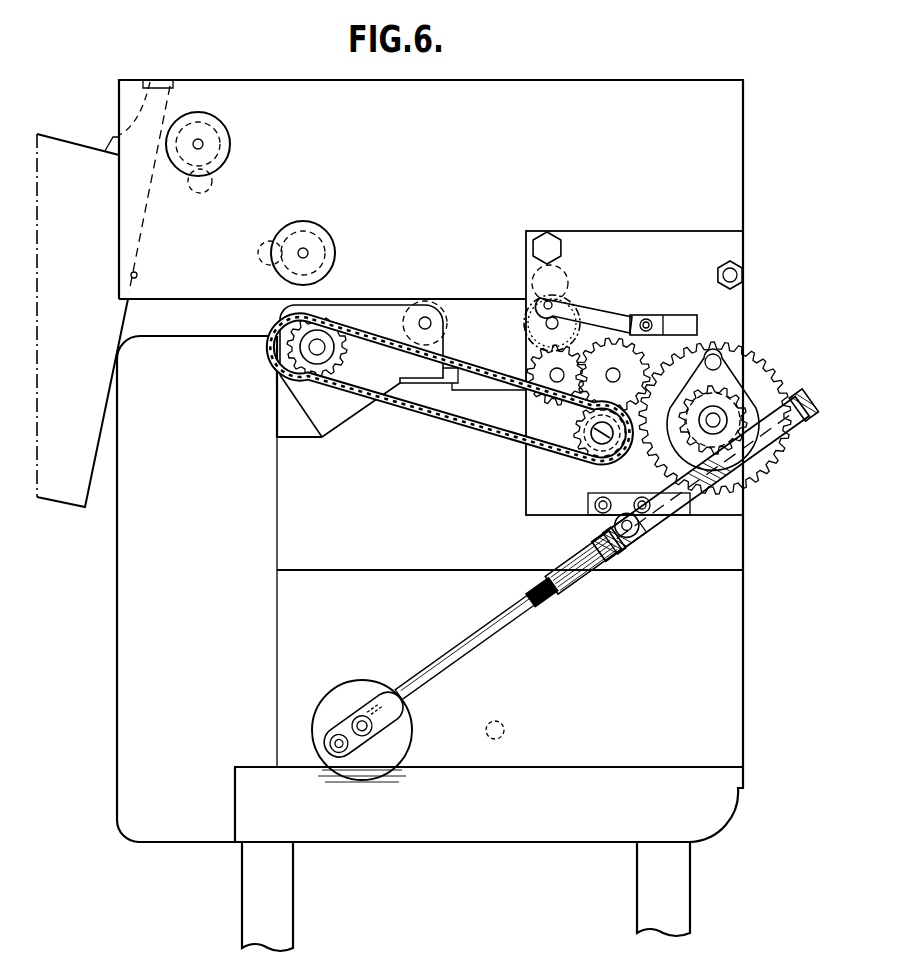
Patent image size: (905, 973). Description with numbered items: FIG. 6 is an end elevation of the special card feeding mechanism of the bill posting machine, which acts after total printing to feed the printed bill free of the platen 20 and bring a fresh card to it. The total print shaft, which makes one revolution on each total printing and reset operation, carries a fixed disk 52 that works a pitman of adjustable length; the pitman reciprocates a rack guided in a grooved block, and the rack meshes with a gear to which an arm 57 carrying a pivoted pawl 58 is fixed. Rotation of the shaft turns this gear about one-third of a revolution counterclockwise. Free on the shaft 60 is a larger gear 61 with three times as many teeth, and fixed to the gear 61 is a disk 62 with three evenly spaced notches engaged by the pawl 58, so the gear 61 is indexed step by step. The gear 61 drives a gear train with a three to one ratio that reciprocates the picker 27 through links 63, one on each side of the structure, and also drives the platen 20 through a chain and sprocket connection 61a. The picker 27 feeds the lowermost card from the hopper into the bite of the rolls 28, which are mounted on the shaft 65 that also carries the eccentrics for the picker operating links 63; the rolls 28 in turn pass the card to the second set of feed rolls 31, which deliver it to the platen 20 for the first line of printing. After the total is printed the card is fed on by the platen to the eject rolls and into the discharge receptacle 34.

The platen 20 is at (328, 318).
The feed rolls 31 is at (425, 305).
The shaft 65 is at (526, 318).
The rolls 28 is at (564, 280).
The links 63 is at (596, 312).
The picker 27 is at (660, 316).
The gear 61 is at (696, 358).
The chain and sprocket connection 61a is at (473, 426).
The arm 57 is at (722, 358).
The pawl 58 is at (735, 400).
The disk 62 is at (674, 410).
The shaft 60 is at (712, 426).
The disk 52 is at (332, 698).
The discharge receptacle 34 is at (70, 497).